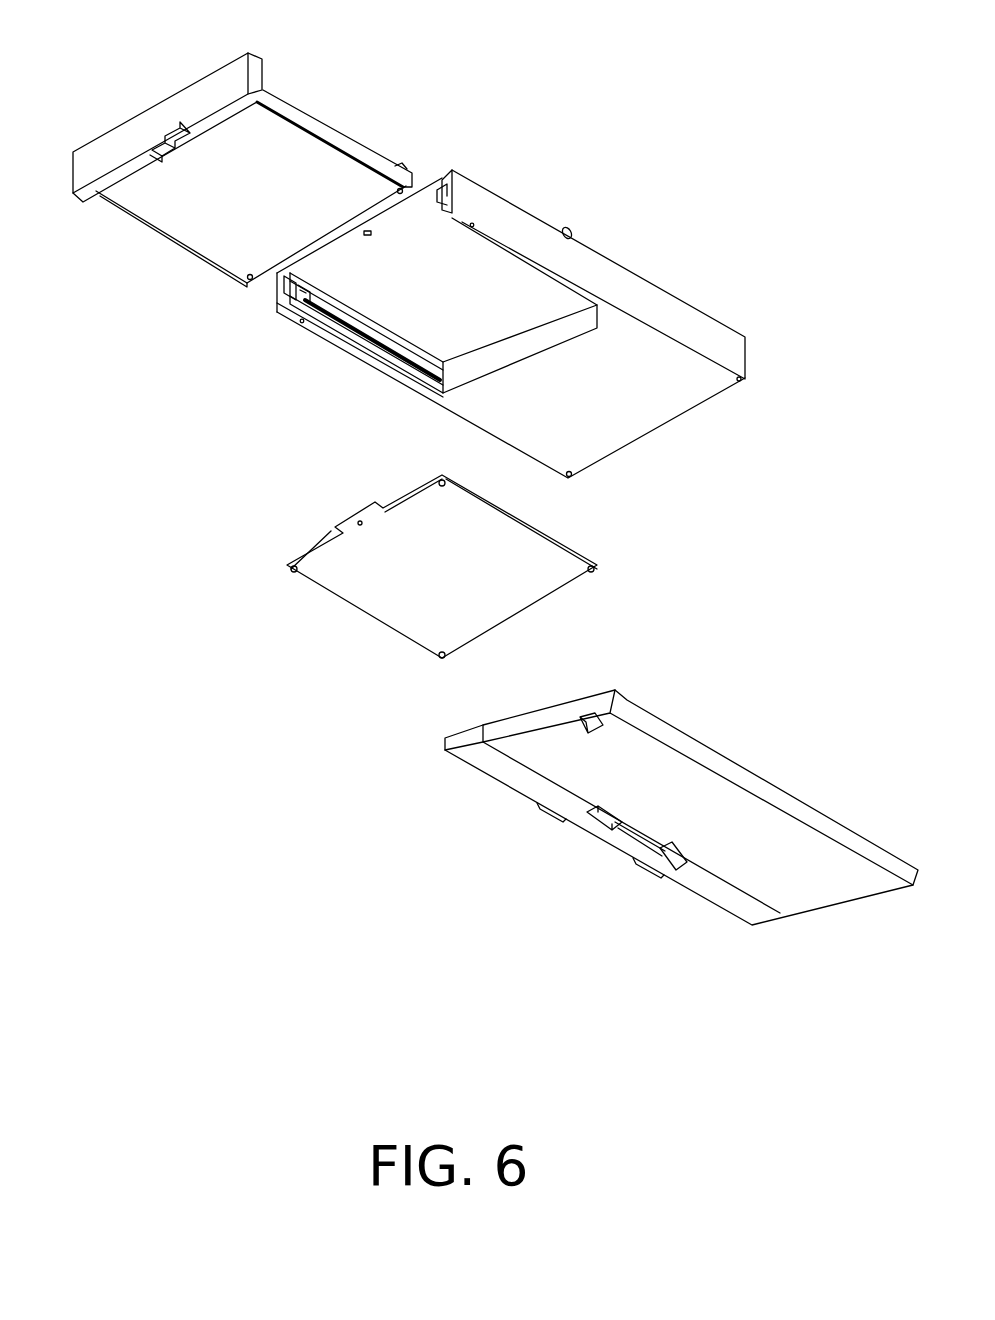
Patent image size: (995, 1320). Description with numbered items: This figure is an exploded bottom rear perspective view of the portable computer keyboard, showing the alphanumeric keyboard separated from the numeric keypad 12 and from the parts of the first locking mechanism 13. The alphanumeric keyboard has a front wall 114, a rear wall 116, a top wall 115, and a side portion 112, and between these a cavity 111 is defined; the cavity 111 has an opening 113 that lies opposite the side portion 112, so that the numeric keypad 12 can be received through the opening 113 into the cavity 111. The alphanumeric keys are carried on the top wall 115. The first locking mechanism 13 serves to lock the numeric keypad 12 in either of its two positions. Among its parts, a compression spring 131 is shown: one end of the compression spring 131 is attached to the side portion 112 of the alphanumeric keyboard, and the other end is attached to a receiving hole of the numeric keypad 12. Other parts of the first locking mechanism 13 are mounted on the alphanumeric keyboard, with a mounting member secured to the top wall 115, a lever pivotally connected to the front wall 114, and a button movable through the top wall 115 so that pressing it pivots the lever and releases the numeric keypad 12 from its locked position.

The numeric keypad 12 is at (177, 228).
The first locking mechanism 13 is at (266, 297).
The compression spring 131 is at (390, 358).
The cavity 111 is at (486, 295).
The side portion 112 is at (478, 407).
The opening 113 is at (436, 201).
The front wall 114 is at (322, 330).
The top wall 115 is at (430, 229).
The rear wall 116 is at (533, 227).